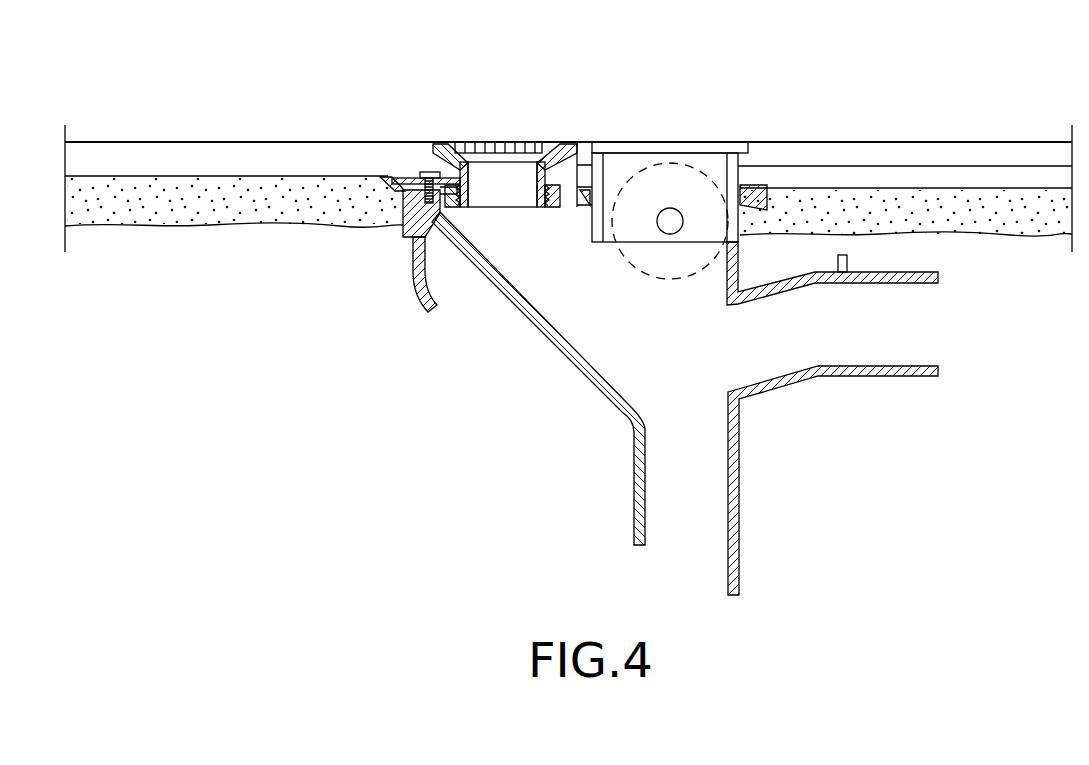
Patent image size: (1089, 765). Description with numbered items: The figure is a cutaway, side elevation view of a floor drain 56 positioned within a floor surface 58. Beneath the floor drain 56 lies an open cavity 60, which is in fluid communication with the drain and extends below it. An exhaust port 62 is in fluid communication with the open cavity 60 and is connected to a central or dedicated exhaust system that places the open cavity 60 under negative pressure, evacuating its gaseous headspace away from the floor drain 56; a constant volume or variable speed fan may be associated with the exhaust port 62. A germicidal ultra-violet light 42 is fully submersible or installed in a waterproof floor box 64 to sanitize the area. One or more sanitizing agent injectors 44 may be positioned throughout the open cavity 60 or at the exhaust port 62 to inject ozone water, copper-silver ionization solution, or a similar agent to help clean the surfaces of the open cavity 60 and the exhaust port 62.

The germicidal ultra-violet light 42 is at (678, 208).
The sanitizing agent injector 44 is at (855, 263).
The floor drain 56 is at (514, 117).
The floor surface 58 is at (876, 139).
The open cavity 60 is at (584, 323).
The exhaust port 62 is at (882, 362).
The waterproof floor box 64 is at (621, 163).